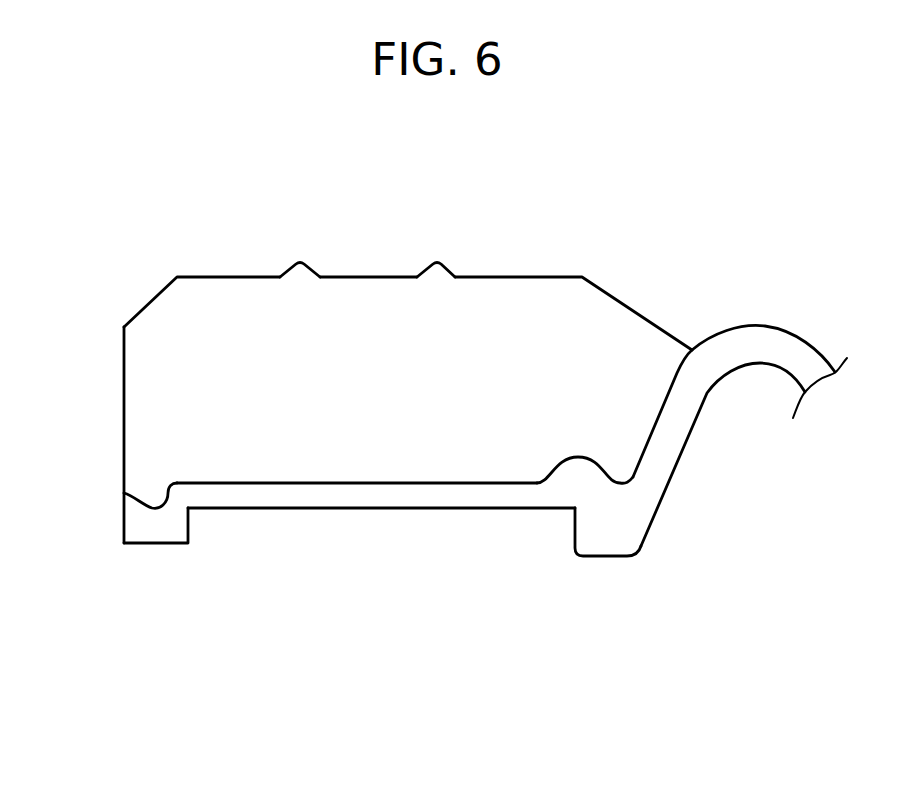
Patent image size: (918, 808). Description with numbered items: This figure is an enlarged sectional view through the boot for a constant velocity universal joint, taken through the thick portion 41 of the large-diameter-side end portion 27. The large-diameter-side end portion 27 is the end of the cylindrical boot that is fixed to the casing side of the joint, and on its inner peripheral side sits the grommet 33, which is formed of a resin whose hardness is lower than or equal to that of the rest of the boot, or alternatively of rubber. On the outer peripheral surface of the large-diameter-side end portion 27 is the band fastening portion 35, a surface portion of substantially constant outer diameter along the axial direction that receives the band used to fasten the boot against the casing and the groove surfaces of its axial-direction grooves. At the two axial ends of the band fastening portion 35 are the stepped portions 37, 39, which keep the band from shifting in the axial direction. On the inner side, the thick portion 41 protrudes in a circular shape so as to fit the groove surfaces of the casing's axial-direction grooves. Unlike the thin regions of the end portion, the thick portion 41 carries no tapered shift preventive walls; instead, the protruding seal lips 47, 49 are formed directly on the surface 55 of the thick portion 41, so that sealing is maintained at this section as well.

The large-diameter-side end portion 27 is at (436, 515).
The grommet 33 is at (163, 417).
The band fastening portion 35 is at (353, 508).
The stepped portion 37 is at (573, 527).
The stepped portion 39 is at (189, 520).
The thick portion 41 is at (390, 272).
The seal lip 47 is at (437, 263).
The seal lip 49 is at (300, 263).
The surface of the thick portion 55 is at (365, 277).